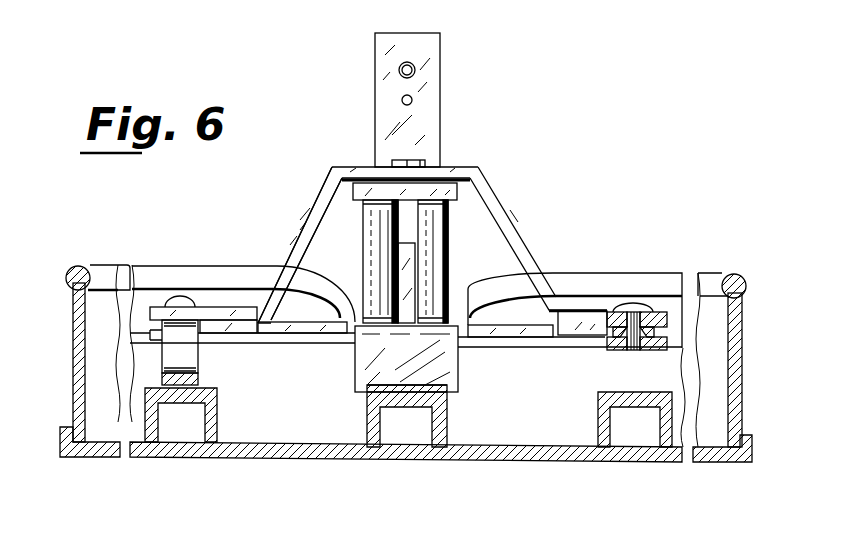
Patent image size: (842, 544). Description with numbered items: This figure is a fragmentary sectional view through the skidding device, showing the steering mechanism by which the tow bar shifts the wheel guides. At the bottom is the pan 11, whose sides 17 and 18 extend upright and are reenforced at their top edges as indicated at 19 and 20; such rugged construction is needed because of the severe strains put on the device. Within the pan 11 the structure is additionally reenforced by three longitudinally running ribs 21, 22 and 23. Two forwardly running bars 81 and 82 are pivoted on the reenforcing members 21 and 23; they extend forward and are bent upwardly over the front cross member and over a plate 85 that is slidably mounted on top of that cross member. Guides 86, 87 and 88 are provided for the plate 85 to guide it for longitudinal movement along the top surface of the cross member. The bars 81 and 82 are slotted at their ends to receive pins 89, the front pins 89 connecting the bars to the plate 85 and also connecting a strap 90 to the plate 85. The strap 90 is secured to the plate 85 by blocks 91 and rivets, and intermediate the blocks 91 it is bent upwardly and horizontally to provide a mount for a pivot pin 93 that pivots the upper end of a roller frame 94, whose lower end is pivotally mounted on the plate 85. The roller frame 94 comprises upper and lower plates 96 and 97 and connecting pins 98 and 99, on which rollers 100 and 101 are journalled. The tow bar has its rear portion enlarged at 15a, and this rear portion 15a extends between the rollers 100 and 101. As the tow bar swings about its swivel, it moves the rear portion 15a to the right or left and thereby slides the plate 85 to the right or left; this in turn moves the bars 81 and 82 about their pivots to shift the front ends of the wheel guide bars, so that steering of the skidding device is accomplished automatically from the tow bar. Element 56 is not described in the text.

The pan 11 is at (458, 455).
The side 17 is at (72, 375).
The side 18 is at (742, 375).
The reinforced top edge 19 is at (76, 270).
The reinforced top edge 20 is at (738, 273).
The longitudinally running rib 21 is at (217, 416).
The longitudinally running rib 22 is at (447, 425).
The longitudinally running rib 23 is at (598, 430).
The pad 56 is at (443, 388).
The forwardly running bar 81 is at (168, 355).
The forwardly running bar 82 is at (648, 340).
The plate 85 is at (287, 338).
The guide 86 is at (297, 331).
The guide 87 is at (500, 332).
The guide 88 is at (440, 345).
The pin 89 is at (632, 350).
The strap 90 is at (302, 237).
The block 91 is at (238, 327).
The pivot pin 93 is at (400, 158).
The roller frame 94 is at (347, 185).
The upper plate 96 is at (460, 192).
The lower plate 97 is at (347, 283).
The connecting pin 98 is at (373, 202).
The connecting pin 99 is at (433, 203).
The roller 100 is at (373, 230).
The roller 101 is at (435, 248).
The enlarged rear portion of the tow bar 15a is at (407, 268).